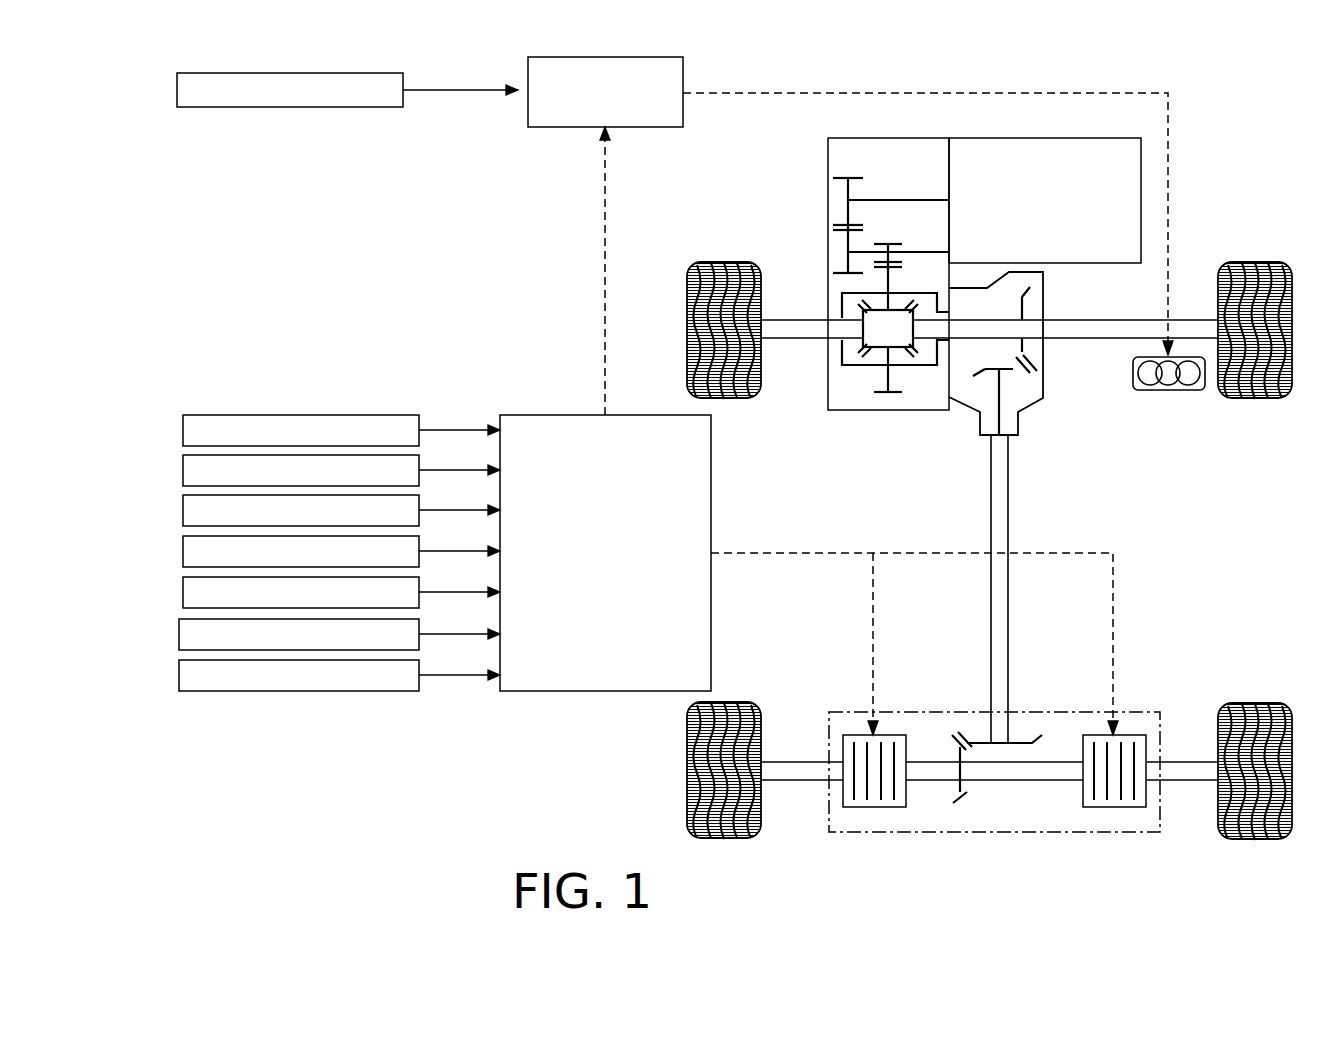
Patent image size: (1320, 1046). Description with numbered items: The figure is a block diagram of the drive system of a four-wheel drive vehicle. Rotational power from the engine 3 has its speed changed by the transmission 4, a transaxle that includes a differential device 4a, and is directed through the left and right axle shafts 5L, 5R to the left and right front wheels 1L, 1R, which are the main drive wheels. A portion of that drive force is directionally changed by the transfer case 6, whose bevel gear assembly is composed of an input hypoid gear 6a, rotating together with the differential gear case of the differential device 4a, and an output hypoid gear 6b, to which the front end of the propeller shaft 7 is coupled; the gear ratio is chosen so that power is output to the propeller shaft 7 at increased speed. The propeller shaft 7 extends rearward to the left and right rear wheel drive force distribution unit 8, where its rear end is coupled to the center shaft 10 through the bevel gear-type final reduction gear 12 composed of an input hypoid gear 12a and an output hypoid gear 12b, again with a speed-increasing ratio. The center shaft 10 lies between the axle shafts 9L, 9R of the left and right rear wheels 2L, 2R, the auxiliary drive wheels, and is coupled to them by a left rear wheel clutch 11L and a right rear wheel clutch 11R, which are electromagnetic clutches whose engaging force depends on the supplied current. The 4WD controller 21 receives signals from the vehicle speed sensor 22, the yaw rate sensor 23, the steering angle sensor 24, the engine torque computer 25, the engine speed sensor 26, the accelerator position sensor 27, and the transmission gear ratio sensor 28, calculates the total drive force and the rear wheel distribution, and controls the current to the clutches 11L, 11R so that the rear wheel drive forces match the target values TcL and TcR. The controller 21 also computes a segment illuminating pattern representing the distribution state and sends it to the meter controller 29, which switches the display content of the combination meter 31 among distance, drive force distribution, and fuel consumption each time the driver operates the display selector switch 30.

The left front wheel 1L is at (722, 262).
The right front wheel 1R is at (1253, 262).
The left rear wheel 2L is at (687, 772).
The right rear wheel 2R is at (1253, 703).
The engine 3 is at (1142, 155).
The transmission 4 is at (828, 180).
The differential device 4a is at (862, 366).
The left axle shaft 5L is at (796, 320).
The right axle shaft 5R is at (1102, 320).
The transfer case 6 is at (1026, 372).
The input hypoid gear 6a is at (1025, 350).
The output hypoid gear 6b is at (1012, 372).
The propeller shaft 7 is at (1010, 490).
The left and right rear wheel drive force distribution unit 8 is at (1038, 710).
The left rear axle shaft 9L is at (797, 782).
The right rear axle shaft 9R is at (1185, 762).
The center shaft 10 is at (1030, 782).
The left rear wheel clutch 11L is at (876, 808).
The right rear wheel clutch 11R is at (1110, 808).
The final reduction gear 12 is at (931, 703).
The input hypoid gear 12a is at (957, 696).
The output hypoid gear 12b is at (955, 740).
The 4WD controller 21 is at (530, 415).
The vehicle speed sensor 22 is at (183, 431).
The yaw rate sensor 23 is at (183, 471).
The steering angle sensor 24 is at (183, 511).
The engine torque computer 25 is at (183, 552).
The engine speed sensor 26 is at (183, 593).
The accelerator position sensor 27 is at (179, 635).
The transmission gear ratio sensor 28 is at (179, 676).
The meter controller 29 is at (554, 57).
The display selector switch 30 is at (177, 90).
The combination meter 31 is at (1183, 392).